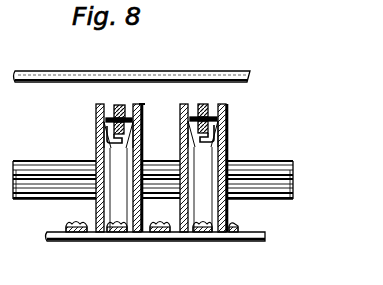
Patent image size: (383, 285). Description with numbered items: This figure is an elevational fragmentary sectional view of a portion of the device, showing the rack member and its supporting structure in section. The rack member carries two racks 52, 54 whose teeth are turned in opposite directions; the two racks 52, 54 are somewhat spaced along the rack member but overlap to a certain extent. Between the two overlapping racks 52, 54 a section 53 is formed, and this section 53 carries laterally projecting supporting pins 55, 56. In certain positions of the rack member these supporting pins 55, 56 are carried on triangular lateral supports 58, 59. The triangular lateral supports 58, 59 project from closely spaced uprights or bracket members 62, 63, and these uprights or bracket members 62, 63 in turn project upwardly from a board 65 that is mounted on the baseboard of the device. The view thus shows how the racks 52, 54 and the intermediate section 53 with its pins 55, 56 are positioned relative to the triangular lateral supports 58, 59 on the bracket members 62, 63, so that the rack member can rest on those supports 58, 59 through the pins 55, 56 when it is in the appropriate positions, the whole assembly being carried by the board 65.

The rack 52 is at (119, 105).
The section 53 is at (142, 109).
The rack 54 is at (108, 141).
The supporting pin 55 is at (138, 126).
The supporting pin 56 is at (106, 116).
The triangular lateral support 58 is at (226, 137).
The triangular lateral support 59 is at (106, 128).
The upright or bracket member 62 is at (98, 206).
The upright or bracket member 63 is at (142, 206).
The board 65 is at (176, 241).